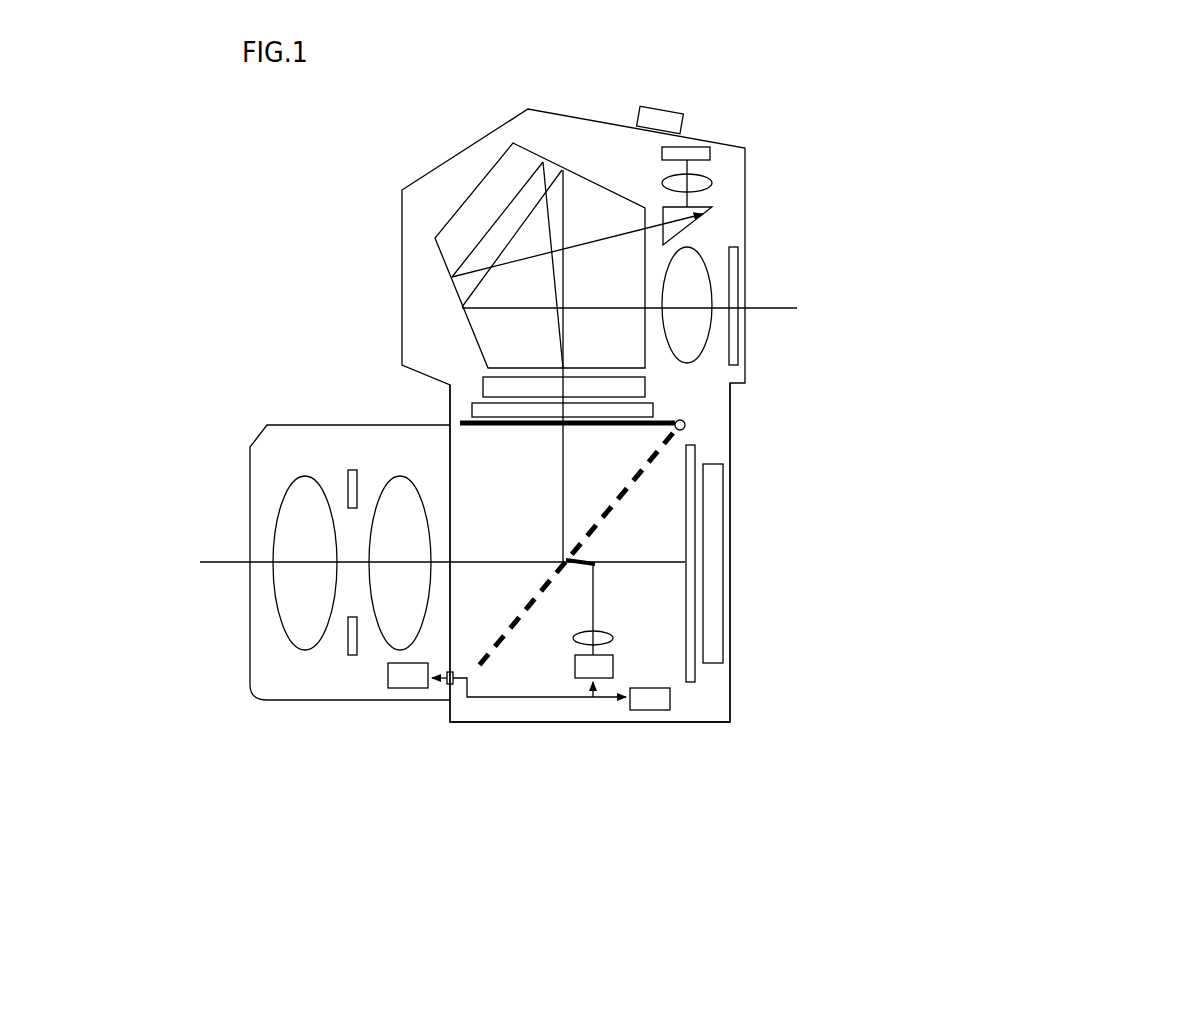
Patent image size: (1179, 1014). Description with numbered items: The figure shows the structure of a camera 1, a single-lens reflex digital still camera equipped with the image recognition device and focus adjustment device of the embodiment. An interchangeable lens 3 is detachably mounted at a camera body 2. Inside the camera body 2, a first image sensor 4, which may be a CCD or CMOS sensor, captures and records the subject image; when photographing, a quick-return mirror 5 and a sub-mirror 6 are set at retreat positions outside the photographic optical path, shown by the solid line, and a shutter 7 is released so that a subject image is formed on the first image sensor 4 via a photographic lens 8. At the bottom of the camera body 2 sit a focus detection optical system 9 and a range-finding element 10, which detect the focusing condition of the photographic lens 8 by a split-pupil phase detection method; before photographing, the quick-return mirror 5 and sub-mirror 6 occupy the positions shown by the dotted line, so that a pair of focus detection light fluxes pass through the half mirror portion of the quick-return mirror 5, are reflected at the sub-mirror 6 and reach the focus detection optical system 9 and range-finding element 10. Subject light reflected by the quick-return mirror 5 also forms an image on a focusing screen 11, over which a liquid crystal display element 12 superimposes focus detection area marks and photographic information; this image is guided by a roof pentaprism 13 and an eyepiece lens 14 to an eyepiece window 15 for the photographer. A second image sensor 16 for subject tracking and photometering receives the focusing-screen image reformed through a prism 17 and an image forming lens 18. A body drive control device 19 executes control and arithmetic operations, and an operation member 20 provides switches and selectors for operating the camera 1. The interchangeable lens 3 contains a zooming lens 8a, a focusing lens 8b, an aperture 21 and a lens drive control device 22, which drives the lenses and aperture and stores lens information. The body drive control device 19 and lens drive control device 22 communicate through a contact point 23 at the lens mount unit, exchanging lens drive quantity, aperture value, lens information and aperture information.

The camera 1 is at (610, 94).
The camera body 2 is at (525, 722).
The interchangeable lens 3 is at (338, 700).
The first image sensor 4 is at (720, 622).
The quick-return mirror 5 is at (507, 632).
The sub-mirror 6 is at (606, 581).
The shutter 7 is at (697, 507).
The photographic lens 8 is at (352, 480).
The zooming lens 8a is at (305, 476).
The focusing lens 8b is at (400, 476).
The focus detection optical system 9 is at (603, 638).
The range-finding element 10 is at (613, 665).
The focusing screen 11 is at (647, 388).
The liquid crystal display element 12 is at (657, 410).
The roof pentaprism 13 is at (590, 208).
The eyepiece lens 14 is at (703, 322).
The eyepiece window 15 is at (737, 270).
The second image sensor 16 is at (700, 147).
The prism 17 is at (710, 212).
The image forming lens 18 is at (703, 181).
The body drive control device 19 is at (650, 711).
The operation member 20 is at (665, 108).
The aperture 21 is at (350, 648).
The lens drive control device 22 is at (407, 688).
The contact point 23 is at (450, 672).